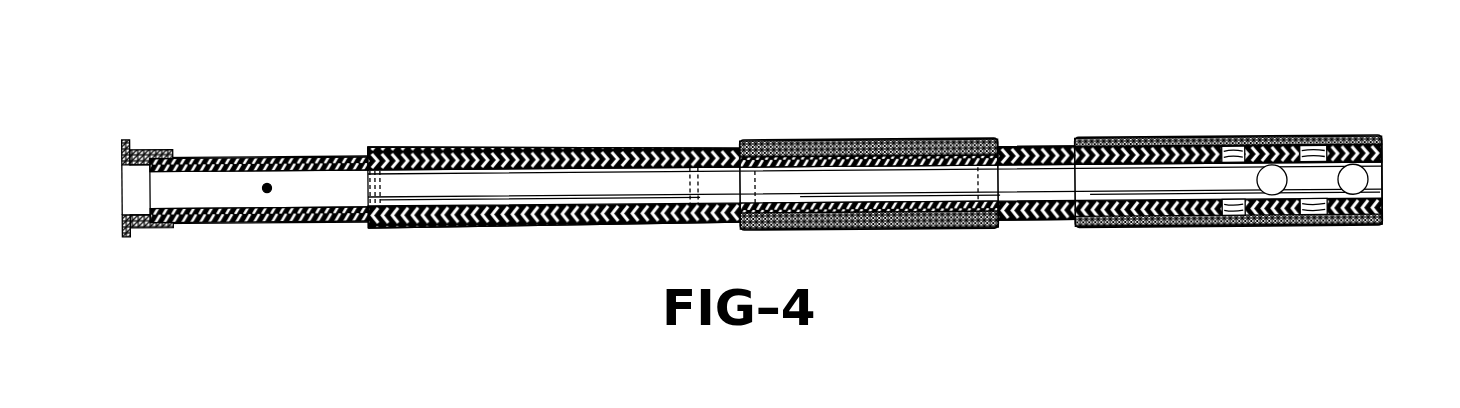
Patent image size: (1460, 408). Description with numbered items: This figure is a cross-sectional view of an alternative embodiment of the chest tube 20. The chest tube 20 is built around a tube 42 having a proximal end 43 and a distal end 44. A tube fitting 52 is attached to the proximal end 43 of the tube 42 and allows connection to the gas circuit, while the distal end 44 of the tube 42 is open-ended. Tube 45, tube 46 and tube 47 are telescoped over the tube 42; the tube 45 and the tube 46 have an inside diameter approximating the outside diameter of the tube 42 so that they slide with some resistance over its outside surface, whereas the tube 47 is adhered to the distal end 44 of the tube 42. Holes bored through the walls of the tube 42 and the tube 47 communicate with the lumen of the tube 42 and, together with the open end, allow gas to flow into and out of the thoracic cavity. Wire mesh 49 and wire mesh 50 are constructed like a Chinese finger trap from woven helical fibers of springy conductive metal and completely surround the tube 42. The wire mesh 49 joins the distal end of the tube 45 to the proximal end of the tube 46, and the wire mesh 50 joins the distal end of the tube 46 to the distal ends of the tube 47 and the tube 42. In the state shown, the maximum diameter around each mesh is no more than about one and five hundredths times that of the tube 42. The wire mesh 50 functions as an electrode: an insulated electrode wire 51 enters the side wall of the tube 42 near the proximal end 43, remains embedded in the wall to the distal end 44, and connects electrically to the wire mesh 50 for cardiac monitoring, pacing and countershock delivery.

The chest tube 20 is at (1039, 252).
The tube 42 is at (330, 158).
The proximal end 43 is at (100, 122).
The distal end 44 is at (1424, 112).
The tube 45 is at (637, 150).
The tube 46 is at (1044, 143).
The tube 47 is at (1385, 211).
The wire mesh 49 is at (737, 137).
The wire mesh 50 is at (1382, 132).
The electrode wire 51 is at (270, 193).
The tube fitting 52 is at (123, 240).